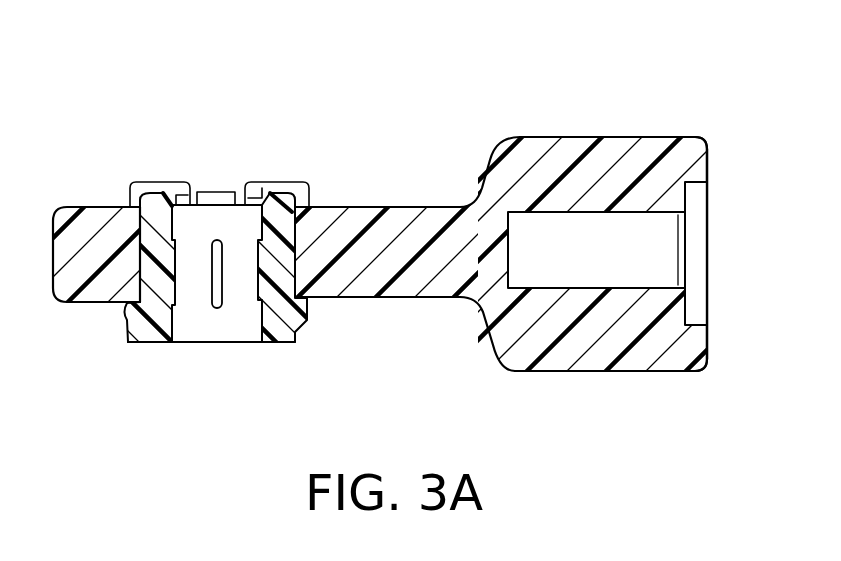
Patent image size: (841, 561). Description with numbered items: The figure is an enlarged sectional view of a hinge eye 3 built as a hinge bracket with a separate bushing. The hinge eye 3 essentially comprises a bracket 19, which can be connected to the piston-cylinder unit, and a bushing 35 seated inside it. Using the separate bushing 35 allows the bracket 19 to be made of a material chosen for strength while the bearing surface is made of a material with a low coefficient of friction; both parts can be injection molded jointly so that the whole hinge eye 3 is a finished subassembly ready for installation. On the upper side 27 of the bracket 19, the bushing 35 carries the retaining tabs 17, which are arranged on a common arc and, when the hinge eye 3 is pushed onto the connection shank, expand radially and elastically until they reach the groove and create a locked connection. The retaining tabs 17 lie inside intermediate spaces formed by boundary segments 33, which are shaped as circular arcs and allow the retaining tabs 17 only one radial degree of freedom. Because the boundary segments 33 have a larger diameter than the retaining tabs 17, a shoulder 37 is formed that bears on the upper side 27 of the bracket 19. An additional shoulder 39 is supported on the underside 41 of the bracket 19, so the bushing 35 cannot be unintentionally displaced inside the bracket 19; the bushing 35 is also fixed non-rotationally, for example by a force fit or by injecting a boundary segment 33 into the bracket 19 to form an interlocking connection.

The hinge eye 3 is at (402, 113).
The retaining tabs 17 is at (260, 190).
The bracket 19 is at (512, 358).
The upper side 27 is at (373, 205).
The boundary segments 33 is at (298, 190).
The bushing 35 is at (230, 332).
The shoulder 37 is at (133, 215).
The additional shoulder 39 is at (130, 312).
The underside 41 is at (380, 298).